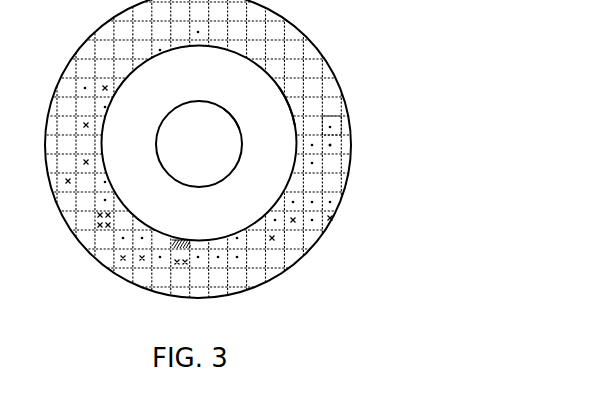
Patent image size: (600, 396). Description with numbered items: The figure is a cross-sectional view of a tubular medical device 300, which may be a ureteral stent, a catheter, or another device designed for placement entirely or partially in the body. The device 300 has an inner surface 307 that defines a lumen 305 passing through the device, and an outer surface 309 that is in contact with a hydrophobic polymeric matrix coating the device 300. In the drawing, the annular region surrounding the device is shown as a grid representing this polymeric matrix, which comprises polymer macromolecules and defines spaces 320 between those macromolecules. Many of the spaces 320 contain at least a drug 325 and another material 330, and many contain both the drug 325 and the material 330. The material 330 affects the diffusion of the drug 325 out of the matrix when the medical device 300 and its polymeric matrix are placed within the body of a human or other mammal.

The tubular medical device 300 is at (214, 85).
The lumen 305 is at (214, 150).
The inner surface 307 is at (234, 116).
The outer surface 309 is at (291, 106).
The spaces 320 is at (332, 127).
The drug 325 is at (332, 145).
The material 330 is at (293, 222).